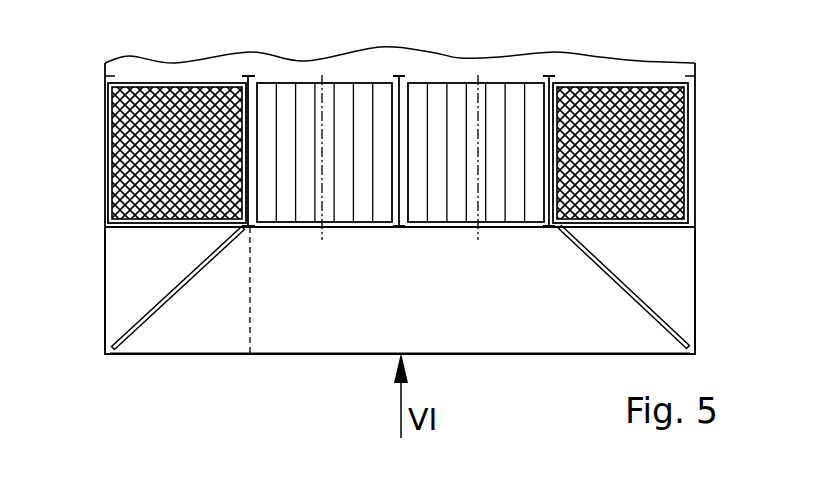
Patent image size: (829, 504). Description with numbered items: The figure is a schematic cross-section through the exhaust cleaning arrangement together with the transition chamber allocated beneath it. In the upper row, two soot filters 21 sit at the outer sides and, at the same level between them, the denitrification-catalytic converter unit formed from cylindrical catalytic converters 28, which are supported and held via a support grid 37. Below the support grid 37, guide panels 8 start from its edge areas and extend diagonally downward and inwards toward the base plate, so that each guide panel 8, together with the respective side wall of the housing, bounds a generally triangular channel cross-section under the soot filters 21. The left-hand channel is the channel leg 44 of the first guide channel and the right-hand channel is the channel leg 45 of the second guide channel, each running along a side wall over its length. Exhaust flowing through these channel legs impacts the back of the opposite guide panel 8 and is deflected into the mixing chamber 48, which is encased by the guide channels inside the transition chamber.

The soot filter 21 is at (177, 103).
The cylindrical catalytic converter 28 is at (360, 103).
The support grid 37 is at (696, 222).
The channel leg 44 is at (130, 250).
The channel leg 45 is at (675, 248).
The mixing chamber 48 is at (407, 292).
The guide panel 8 is at (165, 296).